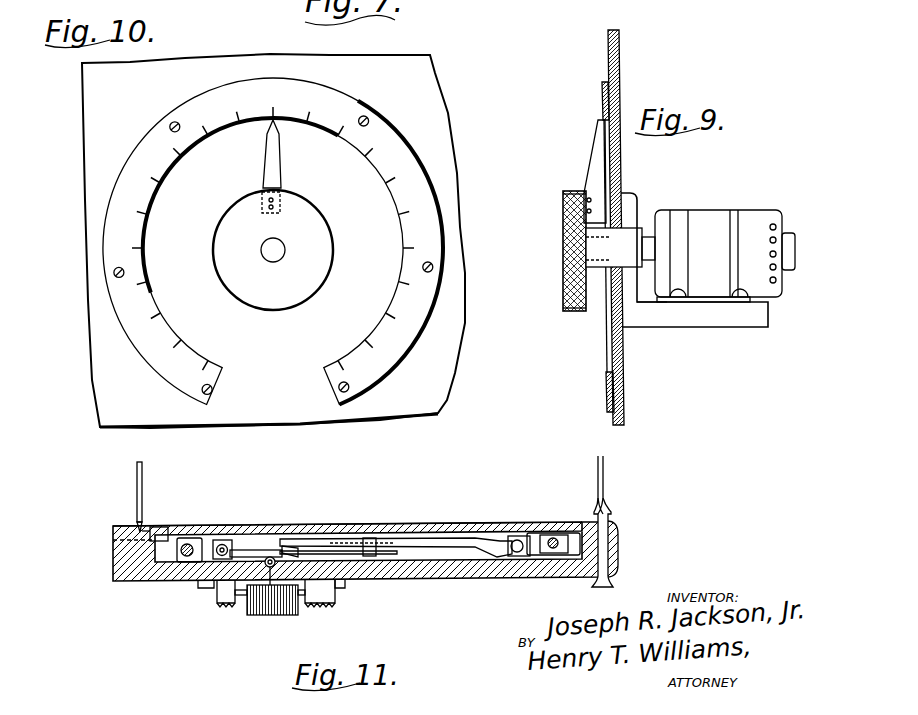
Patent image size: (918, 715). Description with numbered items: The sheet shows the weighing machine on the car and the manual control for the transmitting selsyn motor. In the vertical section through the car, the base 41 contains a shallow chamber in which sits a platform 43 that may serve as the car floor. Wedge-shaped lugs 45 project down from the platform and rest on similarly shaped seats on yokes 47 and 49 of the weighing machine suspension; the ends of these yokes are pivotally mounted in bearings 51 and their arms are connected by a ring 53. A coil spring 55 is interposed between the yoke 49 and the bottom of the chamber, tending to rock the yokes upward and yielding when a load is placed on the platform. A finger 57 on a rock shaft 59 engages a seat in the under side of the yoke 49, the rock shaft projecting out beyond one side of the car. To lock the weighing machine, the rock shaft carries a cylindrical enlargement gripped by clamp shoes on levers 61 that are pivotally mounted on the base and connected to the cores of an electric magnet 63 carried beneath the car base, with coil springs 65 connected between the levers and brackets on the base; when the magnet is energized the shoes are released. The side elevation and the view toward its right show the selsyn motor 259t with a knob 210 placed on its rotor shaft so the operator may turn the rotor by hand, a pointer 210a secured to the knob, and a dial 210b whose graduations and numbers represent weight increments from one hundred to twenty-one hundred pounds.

In FIG. 10, the knob 210 is at (317, 223).
In FIG. 9, the knob 210 is at (563, 281).
In FIG. 10, the pointer 210a is at (275, 171).
In FIG. 9, the pointer 210a is at (597, 157).
In FIG. 10, the dial 210b is at (363, 116).
In FIG. 9, the dial 210b is at (603, 87).
In FIG. 9, the motor with terminals 259t is at (708, 217).
In FIG. 11, the base 41 is at (112, 556).
In FIG. 11, the platform 43 is at (340, 526).
In FIG. 11, the wedge-shaped lugs 45 is at (244, 534).
In FIG. 11, the yoke 47 is at (257, 549).
In FIG. 11, the yoke 49 is at (435, 540).
In FIG. 11, the bearings 51 is at (217, 540).
In FIG. 11, the ring 53 is at (373, 552).
In FIG. 11, the coil spring 55 is at (363, 577).
In FIG. 11, the finger 57 is at (293, 547).
In FIG. 11, the rock shaft 59 is at (268, 618).
In FIG. 11, the levers 61 is at (207, 590).
In FIG. 11, the electric magnet 63 is at (252, 617).
In FIG. 11, the coil springs 65 is at (222, 607).